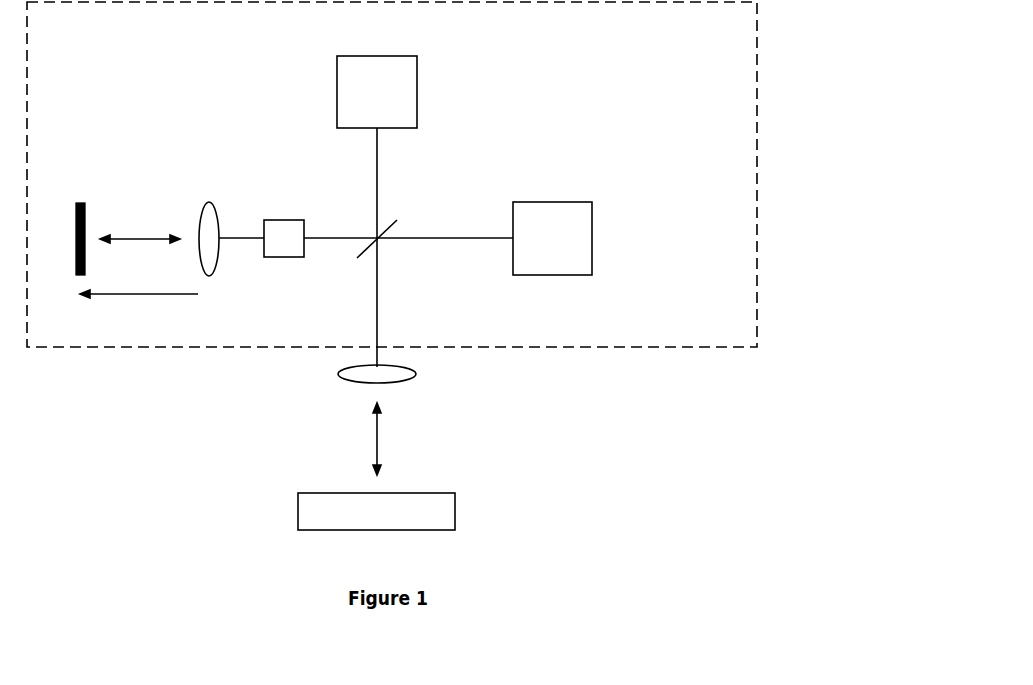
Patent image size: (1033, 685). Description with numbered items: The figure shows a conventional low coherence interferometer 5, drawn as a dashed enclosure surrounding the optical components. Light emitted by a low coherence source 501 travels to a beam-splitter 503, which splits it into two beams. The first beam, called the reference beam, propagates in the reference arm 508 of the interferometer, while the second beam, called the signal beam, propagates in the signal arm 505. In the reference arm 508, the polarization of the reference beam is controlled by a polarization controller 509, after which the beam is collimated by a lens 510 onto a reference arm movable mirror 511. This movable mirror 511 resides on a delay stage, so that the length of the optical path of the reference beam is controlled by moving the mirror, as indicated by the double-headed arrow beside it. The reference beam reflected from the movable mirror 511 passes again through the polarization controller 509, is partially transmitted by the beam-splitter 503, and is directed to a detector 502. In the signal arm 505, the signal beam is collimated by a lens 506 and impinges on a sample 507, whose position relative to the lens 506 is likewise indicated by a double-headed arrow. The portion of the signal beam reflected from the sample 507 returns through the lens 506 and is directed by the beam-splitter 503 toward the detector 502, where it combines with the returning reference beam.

The low coherence interferometer 5 is at (776, 73).
The low coherence source 501 is at (422, 92).
The detector 502 is at (598, 238).
The beam-splitter 503 is at (422, 220).
The signal arm 505 is at (403, 311).
The lens 506 is at (423, 383).
The sample 507 is at (460, 510).
The reference arm 508 is at (325, 222).
The polarization controller 509 is at (286, 273).
The lens 510 is at (207, 183).
The reference arm movable mirror 511 is at (87, 312).